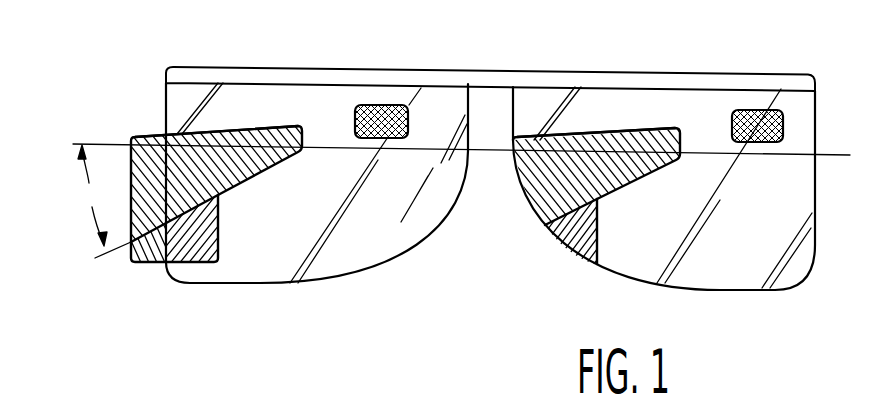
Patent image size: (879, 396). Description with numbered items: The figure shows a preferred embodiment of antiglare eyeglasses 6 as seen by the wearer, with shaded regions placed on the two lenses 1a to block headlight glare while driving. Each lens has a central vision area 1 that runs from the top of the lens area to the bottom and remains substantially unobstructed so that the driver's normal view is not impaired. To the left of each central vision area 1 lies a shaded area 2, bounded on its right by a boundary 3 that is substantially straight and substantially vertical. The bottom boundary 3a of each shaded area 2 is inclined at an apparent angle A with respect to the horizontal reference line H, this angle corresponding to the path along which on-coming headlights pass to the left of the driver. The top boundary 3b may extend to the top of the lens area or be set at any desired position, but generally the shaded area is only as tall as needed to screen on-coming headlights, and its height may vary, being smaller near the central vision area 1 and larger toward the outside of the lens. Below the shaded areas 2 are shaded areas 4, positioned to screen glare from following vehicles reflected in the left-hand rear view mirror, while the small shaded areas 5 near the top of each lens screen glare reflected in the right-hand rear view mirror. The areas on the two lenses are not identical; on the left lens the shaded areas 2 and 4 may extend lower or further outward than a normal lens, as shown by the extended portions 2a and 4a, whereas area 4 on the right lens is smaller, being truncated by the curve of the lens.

The central vision area 1 is at (313, 137).
The lens 1a is at (377, 267).
The shaded area 2 is at (215, 132).
The extended portion of shaded area 2a is at (154, 156).
The boundary of shaded area 3 is at (300, 128).
The bottom boundary of shaded area 3a is at (249, 181).
The top boundary of shaded area 3b is at (248, 126).
The shaded area for left-hand rear view mirror 4 is at (196, 244).
The extended portion of shaded area 4 4a is at (138, 262).
The shaded area for right-hand rear view mirror 5 is at (380, 122).
The eyeglasses 6 is at (185, 67).
The horizontal reference line H is at (94, 144).
The apparent angle A is at (104, 201).